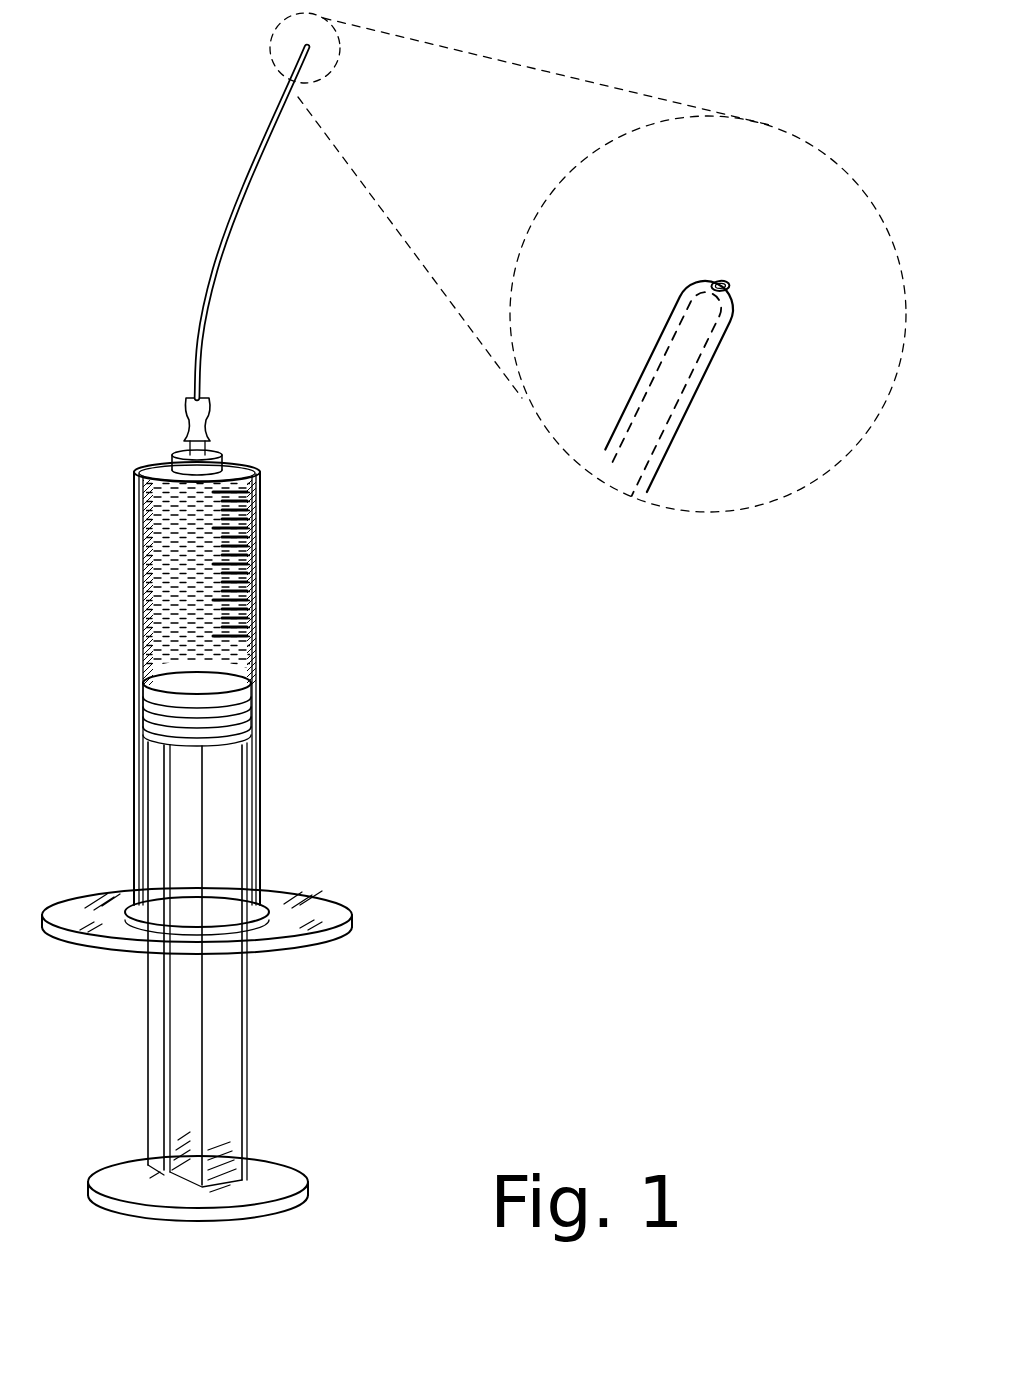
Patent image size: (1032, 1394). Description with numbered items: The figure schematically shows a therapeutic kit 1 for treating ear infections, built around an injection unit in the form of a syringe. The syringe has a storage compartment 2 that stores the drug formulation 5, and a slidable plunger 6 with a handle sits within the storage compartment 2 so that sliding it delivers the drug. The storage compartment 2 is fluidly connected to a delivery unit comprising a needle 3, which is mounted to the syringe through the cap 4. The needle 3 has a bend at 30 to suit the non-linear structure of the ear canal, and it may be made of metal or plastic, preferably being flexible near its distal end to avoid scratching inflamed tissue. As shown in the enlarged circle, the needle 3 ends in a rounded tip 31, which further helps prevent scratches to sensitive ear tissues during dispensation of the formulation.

The therapeutic kit 1 is at (157, 99).
The storage compartment 2 is at (263, 565).
The needle 3 is at (210, 325).
The cap 4 is at (205, 427).
The drug formulation 5 is at (228, 650).
The slidable plunger 6 is at (230, 1025).
The bend 30 is at (205, 283).
The rounded tip 31 is at (724, 285).